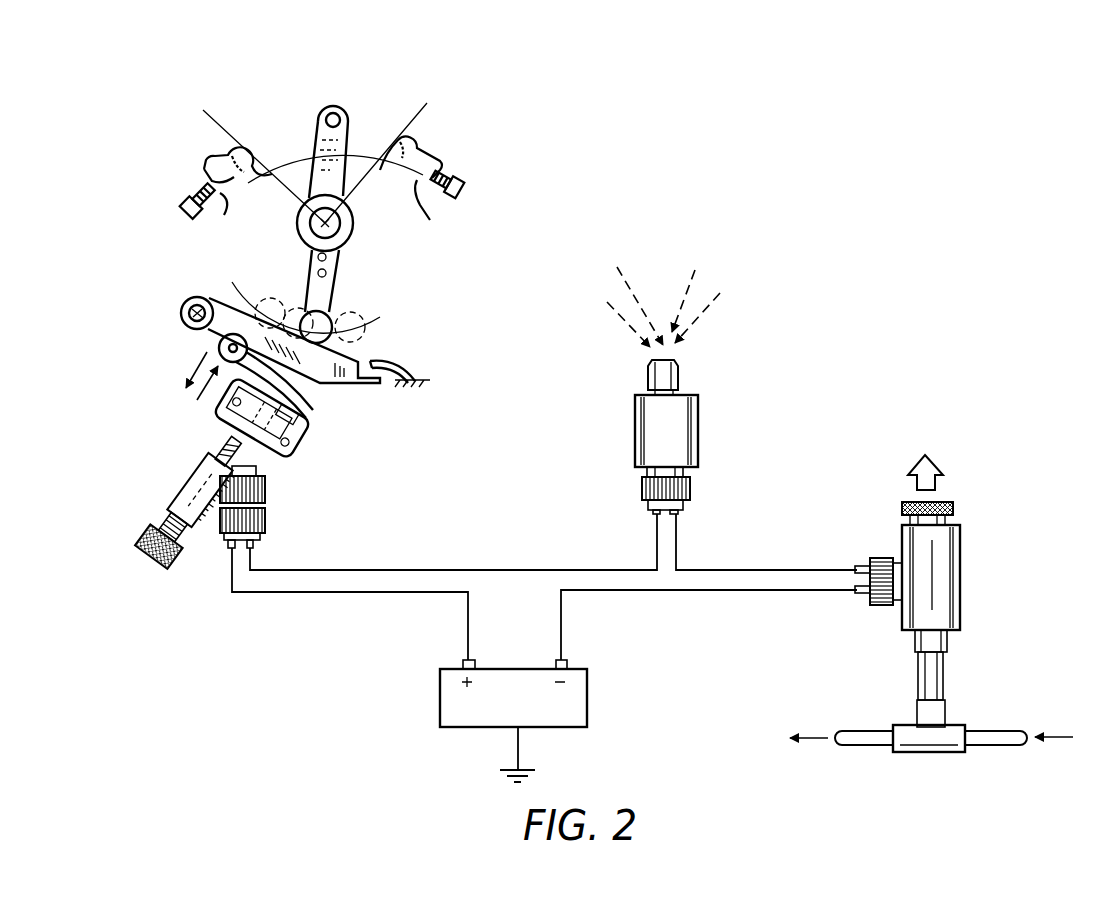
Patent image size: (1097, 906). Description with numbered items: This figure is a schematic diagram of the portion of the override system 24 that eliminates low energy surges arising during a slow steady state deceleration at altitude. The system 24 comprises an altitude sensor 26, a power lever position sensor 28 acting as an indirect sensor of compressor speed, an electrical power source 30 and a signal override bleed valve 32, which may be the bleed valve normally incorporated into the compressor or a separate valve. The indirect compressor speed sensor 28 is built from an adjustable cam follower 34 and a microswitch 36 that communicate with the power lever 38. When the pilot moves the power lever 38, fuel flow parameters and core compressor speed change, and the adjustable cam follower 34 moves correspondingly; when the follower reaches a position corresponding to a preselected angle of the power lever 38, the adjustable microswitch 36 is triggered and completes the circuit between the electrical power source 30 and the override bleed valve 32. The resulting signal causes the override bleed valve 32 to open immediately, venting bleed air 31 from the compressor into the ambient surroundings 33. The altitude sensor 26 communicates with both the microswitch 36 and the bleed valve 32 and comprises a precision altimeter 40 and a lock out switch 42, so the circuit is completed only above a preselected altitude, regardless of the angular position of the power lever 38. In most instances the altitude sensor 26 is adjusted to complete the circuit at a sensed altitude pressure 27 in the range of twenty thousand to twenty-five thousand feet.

The override system 24 is at (665, 347).
The altitude sensor 26 is at (699, 418).
The sensed altitude pressure 27 is at (695, 272).
The power lever position sensor 28 is at (170, 395).
The electrical power source 30 is at (440, 695).
The bleed air 31 is at (1062, 733).
The signal override bleed valve 32 is at (962, 563).
The ambient surroundings 33 is at (943, 462).
The adjustable cam follower 34 is at (182, 318).
The microswitch 36 is at (310, 437).
The power lever 38 is at (325, 108).
The precision altimeter 40 is at (640, 393).
The lock out switch 42 is at (647, 470).